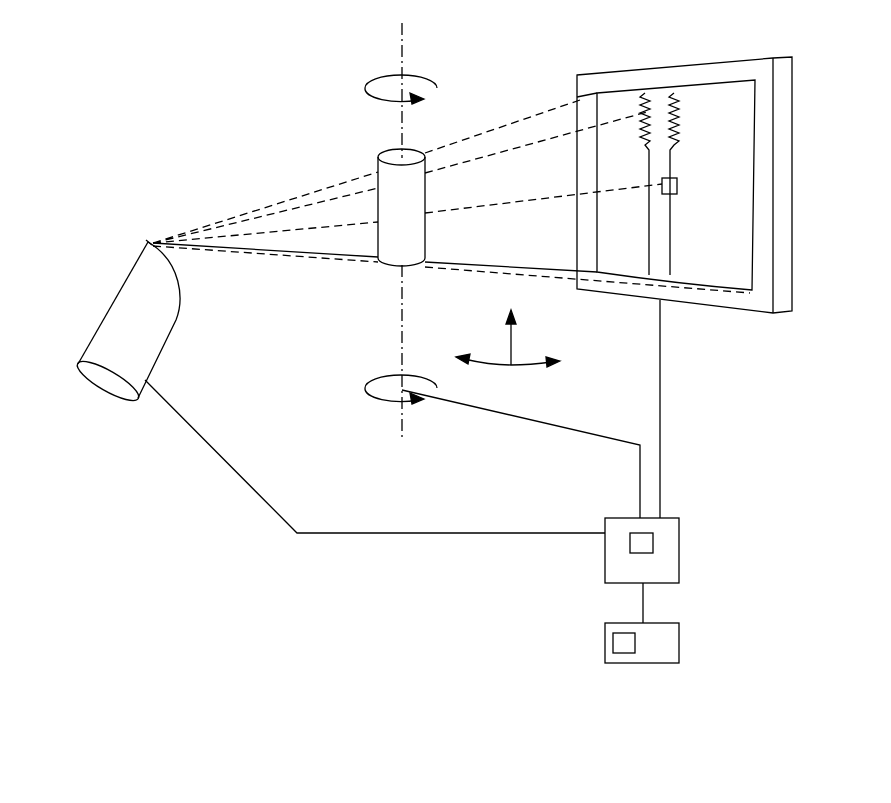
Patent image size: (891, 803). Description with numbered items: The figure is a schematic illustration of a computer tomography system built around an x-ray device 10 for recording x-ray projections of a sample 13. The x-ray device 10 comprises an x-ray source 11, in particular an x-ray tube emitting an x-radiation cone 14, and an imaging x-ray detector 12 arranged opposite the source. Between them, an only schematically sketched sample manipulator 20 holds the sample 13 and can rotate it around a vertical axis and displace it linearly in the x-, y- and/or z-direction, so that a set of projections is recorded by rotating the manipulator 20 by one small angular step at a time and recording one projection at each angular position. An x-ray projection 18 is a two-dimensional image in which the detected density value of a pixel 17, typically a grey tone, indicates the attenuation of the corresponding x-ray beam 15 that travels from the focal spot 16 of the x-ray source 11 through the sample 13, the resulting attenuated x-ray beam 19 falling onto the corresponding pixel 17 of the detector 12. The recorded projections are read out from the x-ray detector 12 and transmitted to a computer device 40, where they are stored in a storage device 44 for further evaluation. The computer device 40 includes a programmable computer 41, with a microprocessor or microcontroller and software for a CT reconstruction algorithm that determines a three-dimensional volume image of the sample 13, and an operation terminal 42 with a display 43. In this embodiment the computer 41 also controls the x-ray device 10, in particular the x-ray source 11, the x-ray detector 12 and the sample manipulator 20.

The x-ray device 10 is at (264, 62).
The x-ray source 11 is at (114, 297).
The imaging x-ray detector 12 is at (660, 60).
The sample 13 is at (381, 172).
The x-radiation cone 14 is at (467, 134).
The x-ray beam 15 is at (285, 232).
The focal spot 16 is at (166, 239).
The pixel 17 is at (678, 184).
The x-ray projection 18 is at (740, 107).
The attenuated x-ray beam 19 is at (527, 198).
The sample manipulator 20 is at (405, 433).
The computer device 40 is at (572, 589).
The programmable computer 41 is at (681, 568).
The operation terminal 42 is at (681, 640).
The display 43 is at (605, 638).
The storage device 44 is at (654, 545).